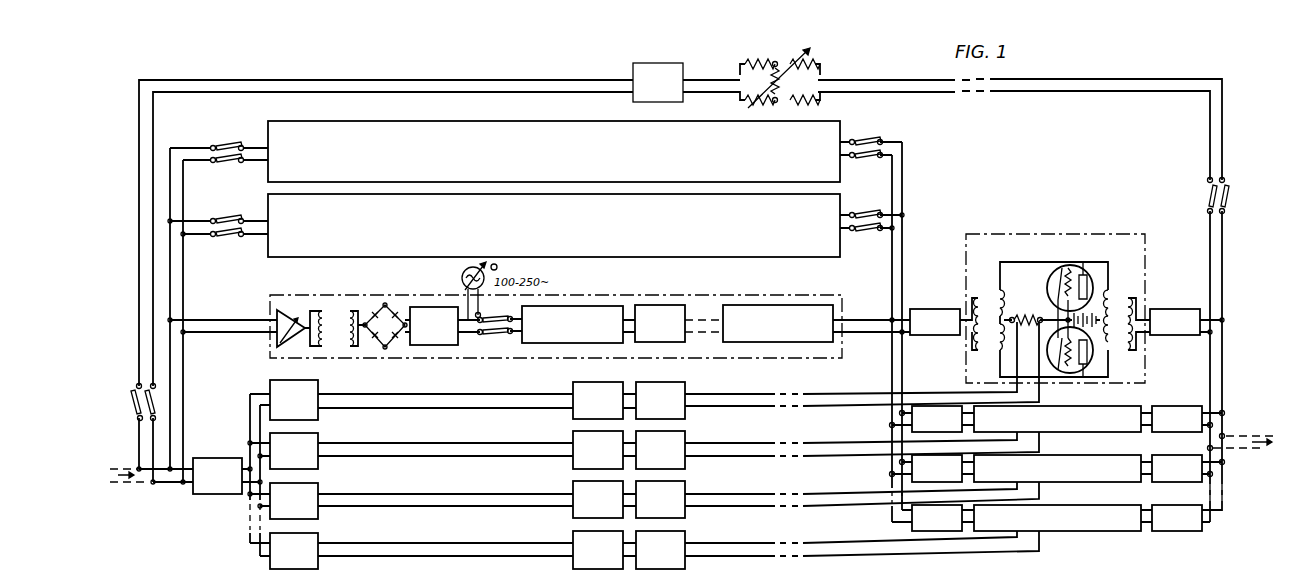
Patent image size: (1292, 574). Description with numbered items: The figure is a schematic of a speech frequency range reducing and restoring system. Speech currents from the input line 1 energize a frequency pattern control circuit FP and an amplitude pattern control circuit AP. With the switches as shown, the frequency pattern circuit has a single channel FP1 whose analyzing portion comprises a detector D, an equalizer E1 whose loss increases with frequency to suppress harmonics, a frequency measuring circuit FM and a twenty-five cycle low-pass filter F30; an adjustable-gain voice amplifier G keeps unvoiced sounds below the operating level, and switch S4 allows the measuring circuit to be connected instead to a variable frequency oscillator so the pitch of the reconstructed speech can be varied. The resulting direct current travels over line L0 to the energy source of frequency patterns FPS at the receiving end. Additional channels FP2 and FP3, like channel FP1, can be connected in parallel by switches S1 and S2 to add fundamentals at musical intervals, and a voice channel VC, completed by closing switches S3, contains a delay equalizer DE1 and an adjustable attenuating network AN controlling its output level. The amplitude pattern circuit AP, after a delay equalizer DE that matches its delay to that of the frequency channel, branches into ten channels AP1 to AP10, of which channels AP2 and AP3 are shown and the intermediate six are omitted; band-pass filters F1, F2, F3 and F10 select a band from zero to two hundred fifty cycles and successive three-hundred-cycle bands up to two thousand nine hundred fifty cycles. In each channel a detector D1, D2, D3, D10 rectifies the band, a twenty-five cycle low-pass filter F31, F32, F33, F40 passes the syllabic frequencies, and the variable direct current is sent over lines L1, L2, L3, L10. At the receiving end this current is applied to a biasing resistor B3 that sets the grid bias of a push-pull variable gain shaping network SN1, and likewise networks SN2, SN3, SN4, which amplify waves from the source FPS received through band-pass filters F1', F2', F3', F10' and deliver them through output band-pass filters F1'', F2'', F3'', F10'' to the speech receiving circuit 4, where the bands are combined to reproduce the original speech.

The line 1 is at (146, 468).
The speech receiving circuit 4 is at (1228, 436).
The voice channel VC is at (146, 110).
The frequency pattern control circuit FP is at (183, 412).
The frequency pattern control channel FP1 is at (452, 296).
The additional frequency pattern control channel FP2 is at (272, 197).
The additional frequency pattern control channel FP3 is at (272, 124).
The switch S1 is at (232, 225).
The switch S2 is at (232, 152).
The switches S3 is at (136, 400).
The switch S4 is at (498, 323).
The amplitude pattern control circuit AP is at (190, 460).
The delay equalizer DE is at (210, 494).
The delay equalizer DE1 is at (640, 103).
The adjustable attenuating network AN is at (748, 74).
The speech band-pass filter F1 is at (271, 395).
The speech band-pass filter F2 is at (292, 448).
The speech band-pass filter F3 is at (292, 498).
The speech band-pass filter F10 is at (295, 548).
The amplitude pattern control channel AP1 is at (440, 398).
The amplitude pattern control channel AP2 is at (440, 446).
The amplitude pattern control channel AP3 is at (440, 496).
The amplitude pattern control channel AP10 is at (440, 546).
The detector D1 is at (573, 412).
The detector 2 D2 is at (598, 450).
The detector 3 D3 is at (598, 499).
The detector 10 D10 is at (598, 550).
The low-pass filter F31 is at (660, 400).
The low-pass filter 32 F32 is at (660, 450).
The low-pass filter 33 F33 is at (660, 499).
The low-pass filter 40 F40 is at (660, 550).
The line L1 is at (747, 400).
The line L2 is at (747, 450).
The line L3 is at (747, 500).
The line L10 is at (752, 550).
The line L0 is at (700, 333).
The voice amplifier G is at (290, 340).
The detector D is at (397, 343).
The equalizer E1 is at (440, 306).
The frequency measuring circuit FM is at (574, 306).
The low-pass filter F30 is at (641, 304).
The energy source of frequency patterns FPS is at (782, 305).
The speech band-pass filter F1' is at (935, 336).
The receiving filter 250-550 F2' is at (902, 419).
The receiving filter 550-850 F3' is at (902, 468).
The receiving filter 2650-2950 F10' is at (900, 518).
The signal shaping network SN1 is at (1055, 308).
The shaping network SN2 is at (1051, 419).
The shaping network SN3 is at (1051, 468).
The shaping network SN4 is at (1051, 518).
The biasing resistor B3 is at (1027, 312).
The speech band-pass filter F1'' is at (1187, 324).
The output filter 250-550 F2'' is at (1183, 428).
The output filter 550-850 F3'' is at (1183, 478).
The output filter 2650-2950 F10'' is at (1181, 528).